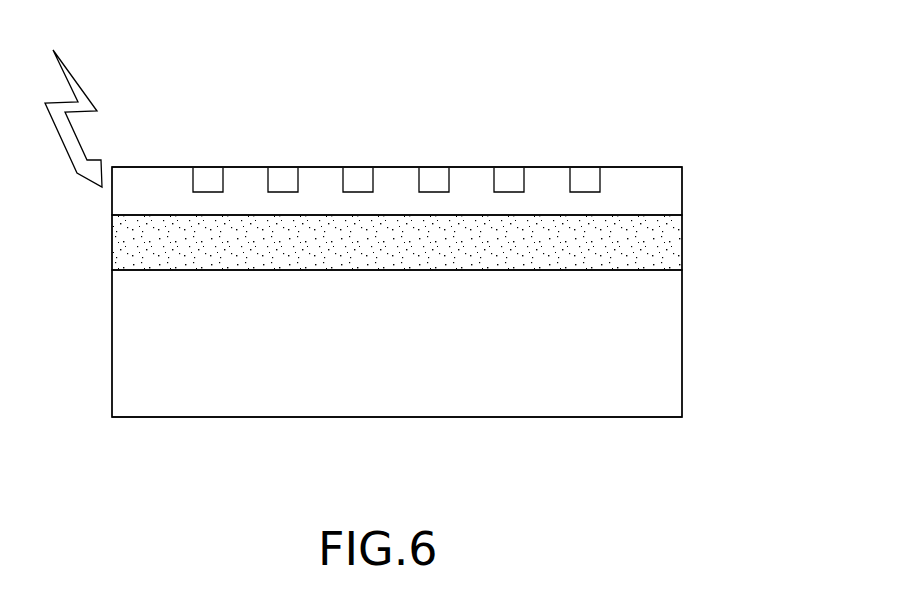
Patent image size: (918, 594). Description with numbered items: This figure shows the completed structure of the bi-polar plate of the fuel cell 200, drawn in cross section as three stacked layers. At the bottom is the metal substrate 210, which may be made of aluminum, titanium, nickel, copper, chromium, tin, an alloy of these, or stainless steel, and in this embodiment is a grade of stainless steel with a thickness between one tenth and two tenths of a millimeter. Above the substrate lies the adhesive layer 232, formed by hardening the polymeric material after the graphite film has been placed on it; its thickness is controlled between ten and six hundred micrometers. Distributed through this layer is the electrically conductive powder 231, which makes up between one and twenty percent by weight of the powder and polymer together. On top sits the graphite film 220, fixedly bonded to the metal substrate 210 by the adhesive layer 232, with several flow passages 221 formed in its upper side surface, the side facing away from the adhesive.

The bi-polar plate of the fuel cell 200 is at (790, 91).
The metal substrate 210 is at (670, 348).
The graphite film 220 is at (673, 194).
The flow passage 221 is at (600, 181).
The electrically conductive powder 231 is at (122, 247).
The adhesive layer 232 is at (673, 243).